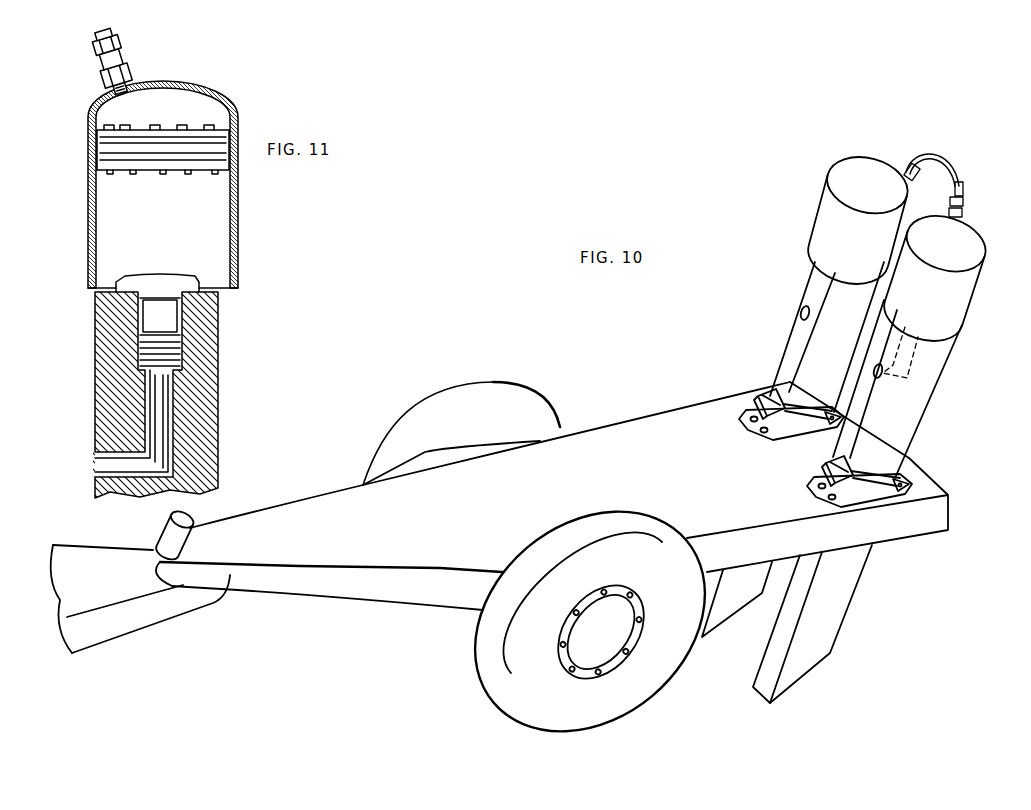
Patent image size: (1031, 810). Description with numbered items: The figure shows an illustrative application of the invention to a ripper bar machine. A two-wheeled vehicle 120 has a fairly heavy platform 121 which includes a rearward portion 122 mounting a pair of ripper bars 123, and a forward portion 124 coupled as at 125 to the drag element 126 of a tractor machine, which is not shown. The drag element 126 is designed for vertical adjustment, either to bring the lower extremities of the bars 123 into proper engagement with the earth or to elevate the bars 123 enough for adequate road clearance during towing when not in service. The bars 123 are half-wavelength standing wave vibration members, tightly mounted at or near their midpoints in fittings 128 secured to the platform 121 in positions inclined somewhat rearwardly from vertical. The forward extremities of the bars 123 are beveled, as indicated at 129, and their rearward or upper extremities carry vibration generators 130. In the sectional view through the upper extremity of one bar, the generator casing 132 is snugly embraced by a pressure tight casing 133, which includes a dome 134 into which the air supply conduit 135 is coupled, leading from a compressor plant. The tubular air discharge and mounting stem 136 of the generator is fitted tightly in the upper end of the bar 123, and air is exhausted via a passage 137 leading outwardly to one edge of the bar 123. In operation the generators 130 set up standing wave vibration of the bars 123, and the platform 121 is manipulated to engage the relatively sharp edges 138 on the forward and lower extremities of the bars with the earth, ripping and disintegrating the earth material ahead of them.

In FIG. 10, the two-wheeled vehicle 120 is at (536, 356).
In FIG. 10, the platform 121 is at (626, 426).
In FIG. 10, the rearward portion 122 is at (923, 482).
In FIG. 11, the ripper bar 123 is at (216, 364).
In FIG. 10, the ripper bar 123 is at (905, 430).
In FIG. 10, the forward portion 124 is at (297, 518).
In FIG. 10, the coupling 125 is at (187, 528).
In FIG. 10, the drag element 126 is at (88, 552).
In FIG. 10, the fitting 128 is at (793, 430).
In FIG. 10, the bevel 129 is at (795, 680).
In FIG. 10, the vibration generator 130 is at (818, 238).
In FIG. 11, the generator casing 132 is at (217, 243).
In FIG. 11, the pressure tight casing 133 is at (239, 212).
In FIG. 11, the dome 134 is at (212, 92).
In FIG. 11, the air supply conduit 135 is at (98, 47).
In FIG. 11, the air discharge and mounting stem 136 is at (151, 318).
In FIG. 11, the passage 137 is at (163, 405).
In FIG. 10, the sharp edge 138 is at (753, 688).